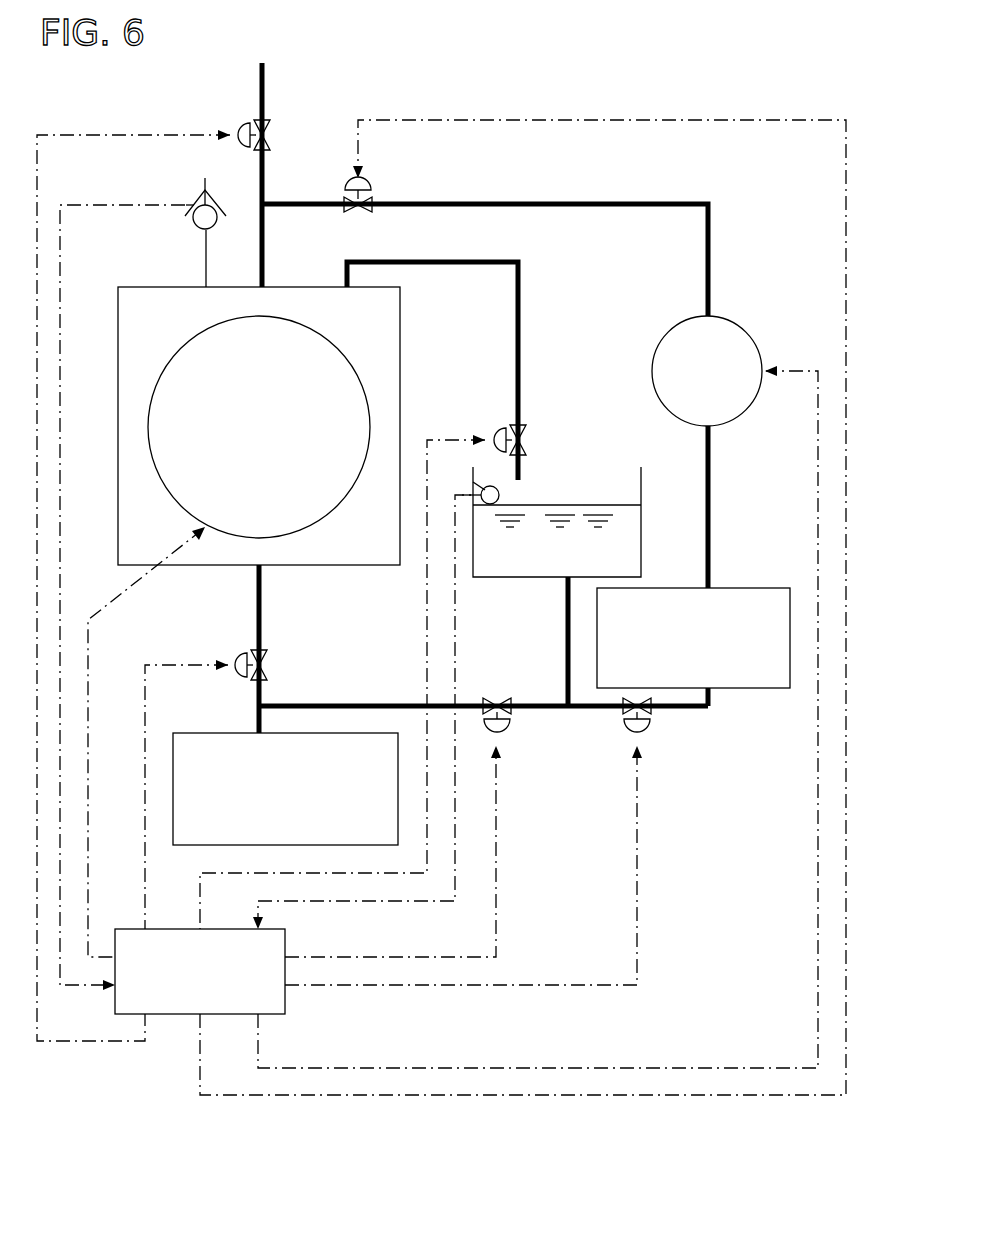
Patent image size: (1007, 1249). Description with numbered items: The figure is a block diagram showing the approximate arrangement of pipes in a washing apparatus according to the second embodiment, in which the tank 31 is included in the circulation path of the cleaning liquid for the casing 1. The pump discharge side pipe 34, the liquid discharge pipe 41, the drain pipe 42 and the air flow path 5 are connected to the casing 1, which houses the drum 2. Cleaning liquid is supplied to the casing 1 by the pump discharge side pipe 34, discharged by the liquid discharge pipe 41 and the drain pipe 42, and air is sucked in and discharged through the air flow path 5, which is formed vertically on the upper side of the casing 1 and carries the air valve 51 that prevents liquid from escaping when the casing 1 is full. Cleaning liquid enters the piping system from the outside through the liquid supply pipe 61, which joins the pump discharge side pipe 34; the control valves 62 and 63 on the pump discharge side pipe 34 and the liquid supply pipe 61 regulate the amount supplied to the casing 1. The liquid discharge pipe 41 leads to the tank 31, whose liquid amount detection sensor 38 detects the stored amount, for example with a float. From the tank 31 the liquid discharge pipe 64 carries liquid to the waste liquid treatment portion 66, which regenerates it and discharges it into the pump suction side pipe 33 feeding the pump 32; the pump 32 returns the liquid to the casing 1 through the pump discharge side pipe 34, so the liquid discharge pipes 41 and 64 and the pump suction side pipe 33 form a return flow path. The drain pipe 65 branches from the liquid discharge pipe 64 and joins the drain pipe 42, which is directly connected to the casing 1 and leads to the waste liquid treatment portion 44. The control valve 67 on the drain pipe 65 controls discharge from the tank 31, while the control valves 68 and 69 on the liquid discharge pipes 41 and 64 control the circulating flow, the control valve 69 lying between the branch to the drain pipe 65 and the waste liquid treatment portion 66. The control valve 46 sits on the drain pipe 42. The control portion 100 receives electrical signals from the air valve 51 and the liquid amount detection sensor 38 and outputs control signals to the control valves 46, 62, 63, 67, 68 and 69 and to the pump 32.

The casing 1 is at (400, 370).
The rotary drum 2 is at (337, 342).
The air flow path 5 is at (204, 258).
The air valve 51 is at (200, 201).
The liquid supply pipe 61 is at (266, 170).
The control valve 62 is at (347, 214).
The control valve 63 is at (275, 122).
The pump discharge side pipe 34 is at (705, 258).
The liquid discharge pipe 41 is at (385, 261).
The pump 32 is at (650, 371).
The pump suction side pipe 33 is at (712, 530).
The control valve 68 is at (528, 430).
The tank 31 is at (495, 580).
The liquid amount detection sensor 38 is at (500, 495).
The liquid discharge pipe for a tank 64 is at (565, 622).
The drain pipe for a tank 65 is at (377, 702).
The waste liquid treatment portion 66 is at (735, 690).
The control valve 67 is at (504, 693).
The control valve 69 is at (632, 740).
The drain pipe 42 is at (256, 593).
The control valve 46 is at (233, 680).
The waste liquid treatment portion 44 is at (176, 848).
The control portion 100 is at (172, 1016).